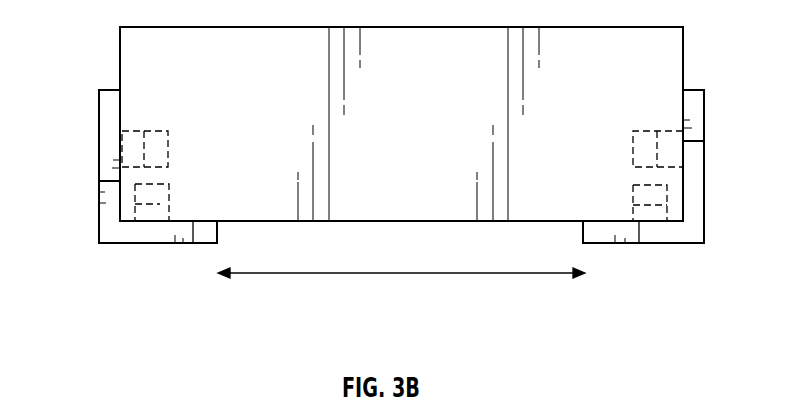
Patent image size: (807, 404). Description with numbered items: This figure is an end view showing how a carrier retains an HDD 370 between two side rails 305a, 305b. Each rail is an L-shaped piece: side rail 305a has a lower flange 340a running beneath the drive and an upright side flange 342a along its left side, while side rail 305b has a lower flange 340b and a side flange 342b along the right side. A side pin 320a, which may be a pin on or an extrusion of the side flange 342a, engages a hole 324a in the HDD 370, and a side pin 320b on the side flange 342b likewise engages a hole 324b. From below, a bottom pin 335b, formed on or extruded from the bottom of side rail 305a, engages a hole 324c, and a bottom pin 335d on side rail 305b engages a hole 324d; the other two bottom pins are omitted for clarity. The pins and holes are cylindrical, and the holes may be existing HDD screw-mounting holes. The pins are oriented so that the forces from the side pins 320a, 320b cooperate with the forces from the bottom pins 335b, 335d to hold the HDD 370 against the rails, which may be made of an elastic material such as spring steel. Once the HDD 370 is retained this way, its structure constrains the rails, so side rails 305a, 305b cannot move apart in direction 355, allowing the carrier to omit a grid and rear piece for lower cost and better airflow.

The HDD 370 is at (416, 135).
The side flange 342a is at (108, 112).
The side flange 342b is at (697, 108).
The side pin 320a is at (128, 153).
The side pin 320b is at (675, 150).
The hole 324a is at (160, 152).
The hole 324b is at (645, 152).
The hole 324c is at (163, 200).
The hole 324d is at (640, 195).
The side rail 305a is at (99, 243).
The side rail 305b is at (704, 243).
The lower flange 340a is at (149, 238).
The lower flange 340b is at (615, 239).
The bottom pin 335b is at (150, 215).
The bottom pin 335d is at (653, 217).
The direction 355 is at (408, 273).